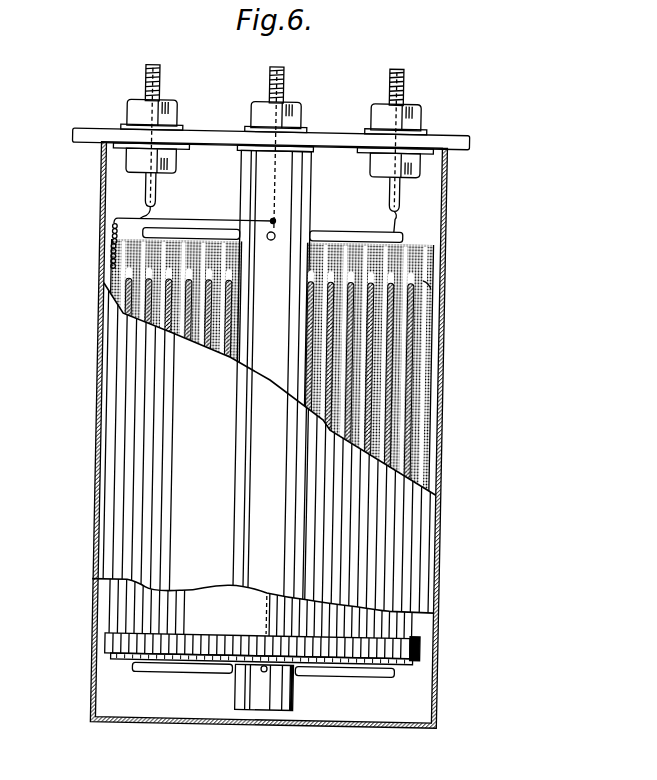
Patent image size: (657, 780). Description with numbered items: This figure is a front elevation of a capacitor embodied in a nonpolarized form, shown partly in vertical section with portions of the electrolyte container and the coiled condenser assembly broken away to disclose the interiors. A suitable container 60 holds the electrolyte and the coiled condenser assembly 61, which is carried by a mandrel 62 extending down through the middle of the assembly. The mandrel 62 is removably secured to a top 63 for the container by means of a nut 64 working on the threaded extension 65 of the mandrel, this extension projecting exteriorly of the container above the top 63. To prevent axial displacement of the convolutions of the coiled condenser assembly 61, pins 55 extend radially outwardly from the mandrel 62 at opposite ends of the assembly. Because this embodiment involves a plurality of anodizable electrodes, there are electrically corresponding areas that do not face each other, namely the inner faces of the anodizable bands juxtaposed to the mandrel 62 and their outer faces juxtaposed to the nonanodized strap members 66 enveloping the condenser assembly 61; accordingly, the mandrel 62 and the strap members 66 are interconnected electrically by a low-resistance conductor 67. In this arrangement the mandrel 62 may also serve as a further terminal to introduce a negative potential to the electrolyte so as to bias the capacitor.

The pins 55 is at (334, 239).
The container 60 is at (420, 562).
The coiled condenser assembly 61 is at (424, 421).
The mandrel 62 is at (286, 196).
The top 63 is at (450, 142).
The nut 64 is at (287, 112).
The threaded extension 65 is at (277, 73).
The nonanodized strap members 66 is at (424, 285).
The low-resistance conductor 67 is at (108, 233).